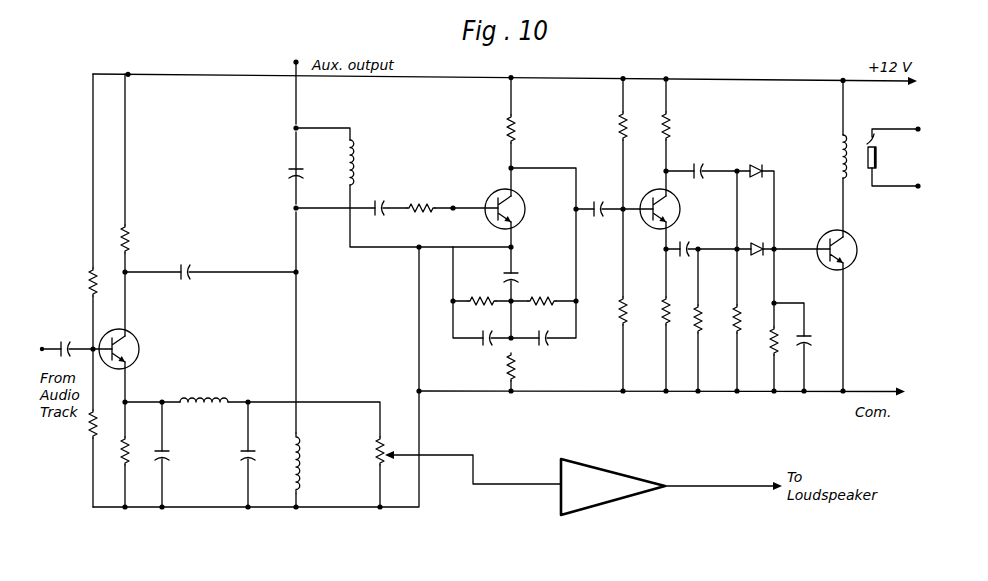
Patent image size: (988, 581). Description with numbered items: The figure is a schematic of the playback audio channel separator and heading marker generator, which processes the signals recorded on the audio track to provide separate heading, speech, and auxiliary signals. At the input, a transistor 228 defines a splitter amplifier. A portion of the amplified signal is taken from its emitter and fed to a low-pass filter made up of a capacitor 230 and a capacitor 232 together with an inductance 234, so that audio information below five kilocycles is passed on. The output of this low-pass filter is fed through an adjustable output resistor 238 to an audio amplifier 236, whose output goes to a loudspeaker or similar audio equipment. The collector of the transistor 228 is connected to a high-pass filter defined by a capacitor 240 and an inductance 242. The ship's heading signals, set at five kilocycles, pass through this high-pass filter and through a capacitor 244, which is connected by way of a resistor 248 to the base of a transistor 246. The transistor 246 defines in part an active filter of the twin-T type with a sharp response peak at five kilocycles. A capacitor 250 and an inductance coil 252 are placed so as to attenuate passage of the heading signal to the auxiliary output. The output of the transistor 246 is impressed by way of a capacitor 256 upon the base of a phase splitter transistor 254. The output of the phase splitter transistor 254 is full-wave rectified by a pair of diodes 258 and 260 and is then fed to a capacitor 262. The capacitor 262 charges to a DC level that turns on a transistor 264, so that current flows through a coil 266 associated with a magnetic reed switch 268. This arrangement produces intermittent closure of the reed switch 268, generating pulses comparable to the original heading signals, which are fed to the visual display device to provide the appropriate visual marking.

The transistor 228 is at (140, 354).
The capacitor 230 is at (163, 432).
The capacitor 232 is at (247, 440).
The inductance 234 is at (214, 397).
The audio amplifier 236 is at (618, 471).
The adjustable output resistor 238 is at (385, 448).
The capacitor 240 is at (192, 274).
The inductance 242 is at (300, 448).
The capacitor 244 is at (381, 204).
The transistor 246 is at (524, 214).
The resistor 248 is at (431, 205).
The capacitor 250 is at (290, 172).
The inductance coil 252 is at (358, 140).
The phase splitter transistor 254 is at (680, 216).
The capacitor 256 is at (591, 200).
The diode 258 is at (760, 168).
The diode 260 is at (763, 242).
The capacitor 262 is at (808, 338).
The transistor 264 is at (850, 260).
The coil 266 is at (841, 169).
The magnetic reed switch 268 is at (890, 113).